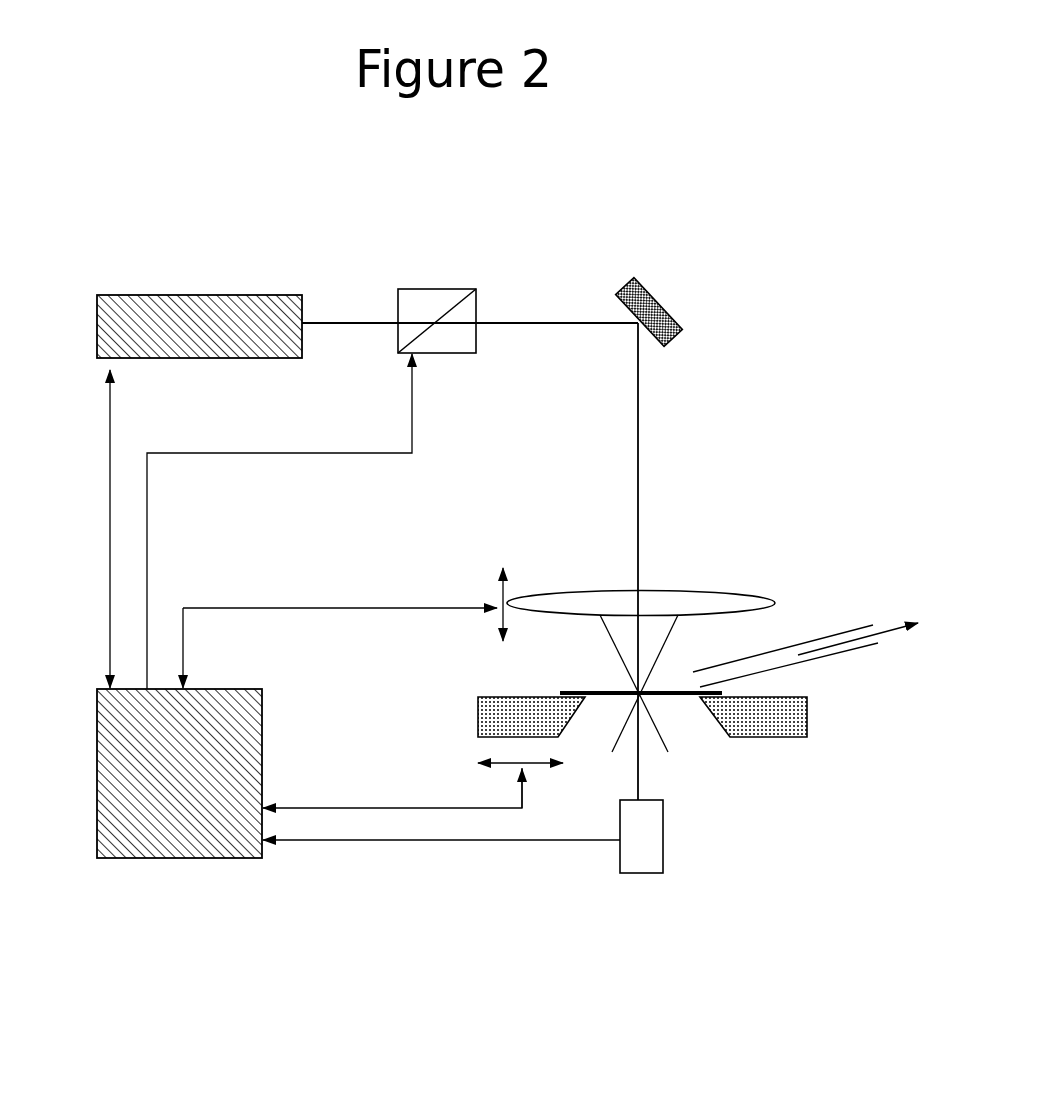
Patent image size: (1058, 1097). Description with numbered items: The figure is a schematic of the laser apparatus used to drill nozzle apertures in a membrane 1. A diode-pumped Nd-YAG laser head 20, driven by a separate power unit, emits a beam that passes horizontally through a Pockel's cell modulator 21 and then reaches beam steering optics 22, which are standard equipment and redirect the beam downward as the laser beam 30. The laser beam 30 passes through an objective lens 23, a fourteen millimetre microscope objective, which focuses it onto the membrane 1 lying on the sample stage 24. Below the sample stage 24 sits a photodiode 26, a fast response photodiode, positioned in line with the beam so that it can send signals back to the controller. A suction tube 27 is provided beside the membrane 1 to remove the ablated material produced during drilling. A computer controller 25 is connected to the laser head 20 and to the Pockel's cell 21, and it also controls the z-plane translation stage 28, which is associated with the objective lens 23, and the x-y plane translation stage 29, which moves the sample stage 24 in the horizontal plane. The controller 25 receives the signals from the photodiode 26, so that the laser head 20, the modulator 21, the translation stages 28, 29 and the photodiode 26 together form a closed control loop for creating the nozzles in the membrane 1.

The membrane 1 is at (680, 702).
The laser head 20 is at (140, 295).
The Pockel's cell modulator 21 is at (433, 289).
The beam steering optics 22 is at (668, 311).
The objective lens 23 is at (677, 590).
The sample stage 24 is at (807, 713).
The computer controller 25 is at (168, 858).
The photodiode 26 is at (642, 873).
The suction tube 27 is at (845, 630).
The z-plane translation stage 28 is at (500, 600).
The x-y plane translation stage 29 is at (510, 760).
The laser beam 30 is at (639, 475).